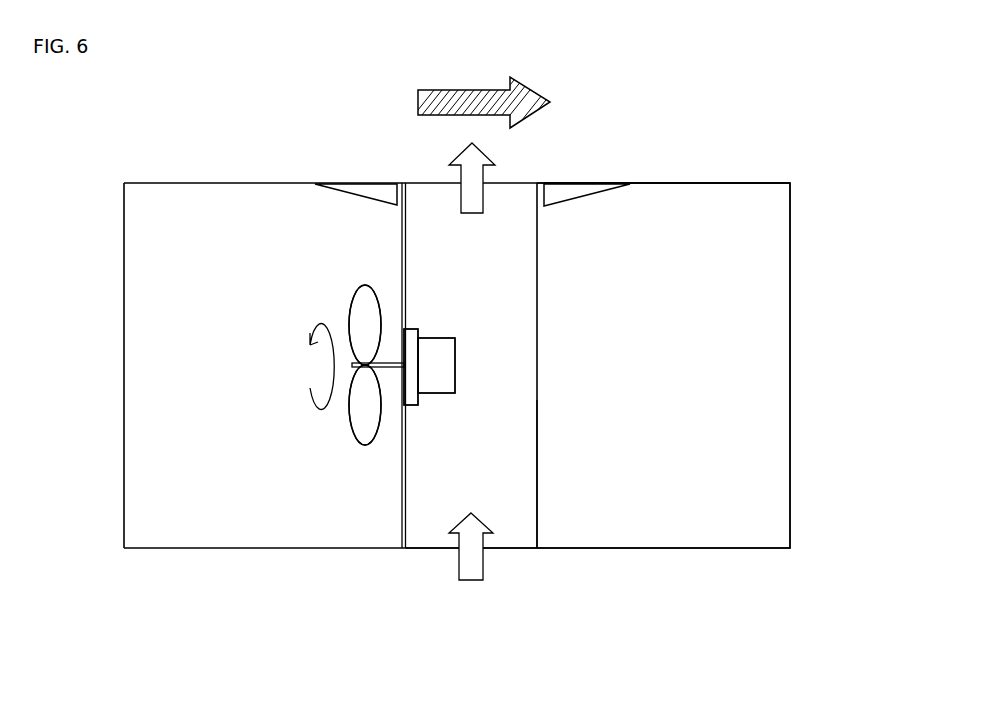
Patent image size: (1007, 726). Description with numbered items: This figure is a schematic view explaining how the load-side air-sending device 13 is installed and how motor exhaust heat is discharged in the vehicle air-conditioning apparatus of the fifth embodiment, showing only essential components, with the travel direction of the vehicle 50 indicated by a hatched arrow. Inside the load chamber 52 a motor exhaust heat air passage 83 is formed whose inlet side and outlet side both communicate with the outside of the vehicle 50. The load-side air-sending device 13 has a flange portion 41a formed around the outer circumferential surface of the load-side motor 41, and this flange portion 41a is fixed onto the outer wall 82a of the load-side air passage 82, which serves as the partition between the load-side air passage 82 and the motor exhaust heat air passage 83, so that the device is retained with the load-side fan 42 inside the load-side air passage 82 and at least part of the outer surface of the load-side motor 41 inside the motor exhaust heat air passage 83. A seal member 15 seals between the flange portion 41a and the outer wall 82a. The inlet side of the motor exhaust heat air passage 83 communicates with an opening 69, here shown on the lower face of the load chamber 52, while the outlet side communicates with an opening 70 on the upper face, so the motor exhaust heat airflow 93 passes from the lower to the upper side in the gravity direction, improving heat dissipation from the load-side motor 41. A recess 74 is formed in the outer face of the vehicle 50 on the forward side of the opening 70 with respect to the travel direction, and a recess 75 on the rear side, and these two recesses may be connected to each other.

The vehicle 50 is at (182, 153).
The load chamber 52 is at (740, 182).
The load-side air passage 82 is at (758, 230).
The outer wall of the load-side air passage 82a is at (403, 266).
The opening 70 is at (525, 182).
The recess 74 is at (570, 193).
The recess 75 is at (380, 192).
The seal member 15 is at (412, 342).
The flange portion 41a is at (418, 333).
The load-side motor 41 is at (437, 383).
The load-side fan 42 is at (363, 415).
The load-side air-sending device 13 is at (420, 625).
The opening 69 is at (527, 550).
The motor exhaust heat airflow 93 is at (477, 563).
The motor exhaust heat air passage 83 is at (515, 460).